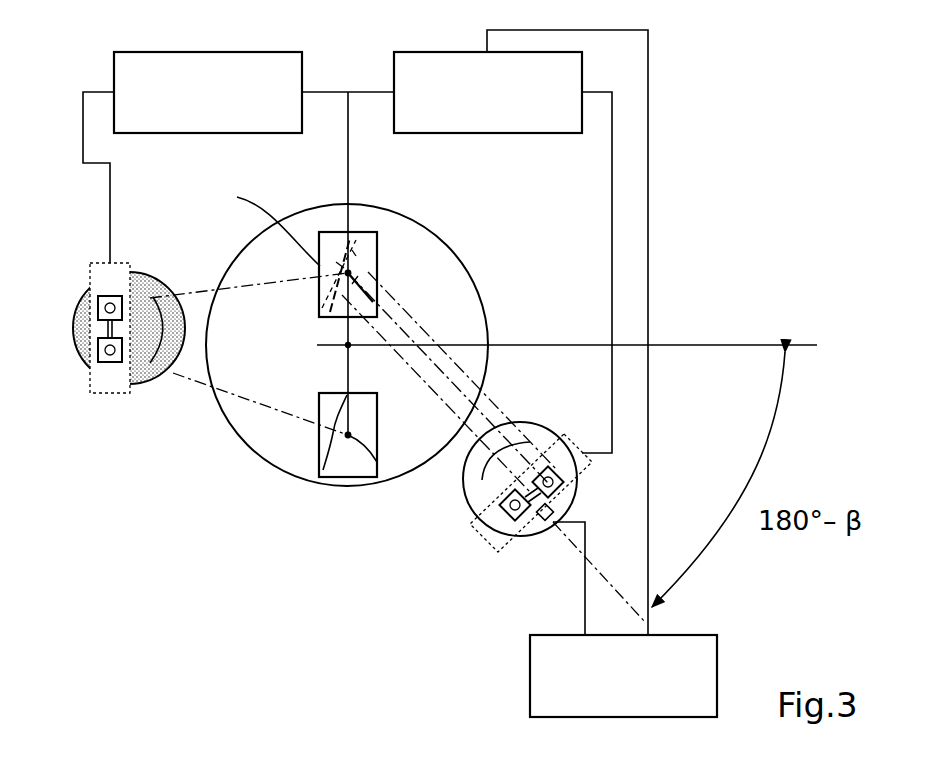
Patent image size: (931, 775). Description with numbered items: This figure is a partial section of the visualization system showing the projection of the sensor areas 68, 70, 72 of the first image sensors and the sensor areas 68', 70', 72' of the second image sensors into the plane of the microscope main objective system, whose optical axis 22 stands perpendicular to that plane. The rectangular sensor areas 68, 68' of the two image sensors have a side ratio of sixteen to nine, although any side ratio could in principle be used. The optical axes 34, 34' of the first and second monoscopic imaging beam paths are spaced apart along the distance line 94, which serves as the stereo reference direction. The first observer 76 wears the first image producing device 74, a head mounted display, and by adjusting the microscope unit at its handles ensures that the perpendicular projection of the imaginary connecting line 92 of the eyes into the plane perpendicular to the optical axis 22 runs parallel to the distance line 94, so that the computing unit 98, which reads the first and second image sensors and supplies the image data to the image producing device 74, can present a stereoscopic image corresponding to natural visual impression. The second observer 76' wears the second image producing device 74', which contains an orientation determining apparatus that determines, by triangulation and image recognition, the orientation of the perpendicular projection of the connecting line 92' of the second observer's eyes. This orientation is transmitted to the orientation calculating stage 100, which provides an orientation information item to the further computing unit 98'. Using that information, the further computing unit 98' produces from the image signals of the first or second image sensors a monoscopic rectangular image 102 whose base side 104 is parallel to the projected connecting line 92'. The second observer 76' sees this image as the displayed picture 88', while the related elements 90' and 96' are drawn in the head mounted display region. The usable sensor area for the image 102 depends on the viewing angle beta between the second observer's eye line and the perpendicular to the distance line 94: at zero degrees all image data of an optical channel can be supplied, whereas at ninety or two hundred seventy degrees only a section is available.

The optical axis of the microscope main objective system 22 is at (348, 347).
The optical axis of the first monoscopic imaging beam path 34 is at (447, 233).
The optical axis of the second monoscopic imaging beam path 34' is at (414, 509).
The first sensor area 68 is at (412, 229).
The sensor area 70 is at (412, 229).
The sensor area 72 is at (412, 229).
The second sensor area 68' is at (331, 483).
The sensor area 70' is at (331, 483).
The sensor area 72' is at (331, 483).
The first image producing device 74 is at (106, 363).
The second image producing device 74' is at (527, 523).
The first observer 76 is at (181, 340).
The second observer 76' is at (555, 491).
The second light transmitter 88' is at (523, 556).
The second light receiver 90' is at (589, 485).
The connecting line 92 is at (63, 321).
The connecting line 92' is at (587, 515).
The distance line 94 is at (348, 328).
The additional sensor 96' is at (561, 546).
The computing unit 98 is at (238, 157).
The further computing unit 98' is at (521, 332).
The orientation calculating stage 100 is at (645, 692).
The monoscopic rectangular image 102 is at (333, 232).
The base side 104 is at (380, 288).